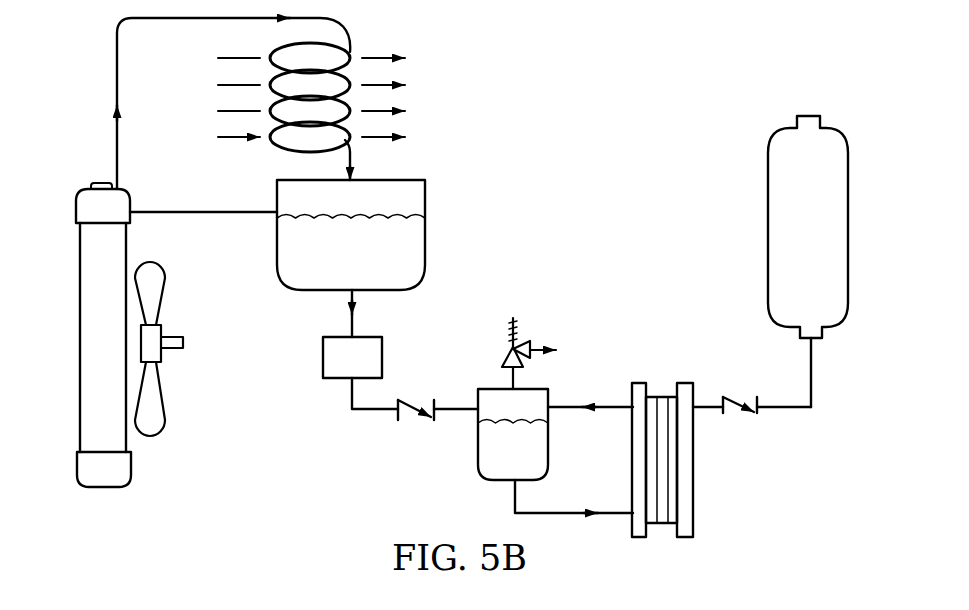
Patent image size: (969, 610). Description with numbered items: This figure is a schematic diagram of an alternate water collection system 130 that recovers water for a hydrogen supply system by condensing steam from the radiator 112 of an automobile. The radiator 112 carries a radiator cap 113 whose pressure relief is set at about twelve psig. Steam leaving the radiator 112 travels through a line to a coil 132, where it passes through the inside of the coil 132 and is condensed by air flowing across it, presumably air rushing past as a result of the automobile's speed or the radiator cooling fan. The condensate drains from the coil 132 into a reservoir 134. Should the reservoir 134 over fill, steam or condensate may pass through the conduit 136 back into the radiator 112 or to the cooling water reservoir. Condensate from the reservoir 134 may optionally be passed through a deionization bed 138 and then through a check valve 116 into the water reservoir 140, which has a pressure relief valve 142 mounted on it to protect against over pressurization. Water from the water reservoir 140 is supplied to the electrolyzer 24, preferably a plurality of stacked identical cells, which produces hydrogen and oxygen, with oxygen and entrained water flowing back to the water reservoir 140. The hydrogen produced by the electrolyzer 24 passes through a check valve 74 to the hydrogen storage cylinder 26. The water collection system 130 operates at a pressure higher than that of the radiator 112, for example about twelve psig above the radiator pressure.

The water collection system 130 is at (600, 76).
The radiator 112 is at (132, 474).
The radiator cap 113 is at (100, 183).
The coil 132 is at (341, 30).
The reservoir 134 is at (425, 200).
The conduit 136 is at (226, 210).
The deionization bed 138 is at (323, 361).
The check valve 116 is at (397, 420).
The water reservoir 140 is at (478, 447).
The pressure relief valve 142 is at (527, 340).
The electrolyzer 24 is at (693, 468).
The check valve 74 is at (745, 417).
The hydrogen storage cylinder 26 is at (823, 235).